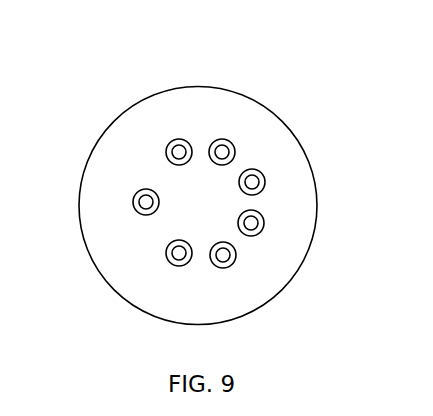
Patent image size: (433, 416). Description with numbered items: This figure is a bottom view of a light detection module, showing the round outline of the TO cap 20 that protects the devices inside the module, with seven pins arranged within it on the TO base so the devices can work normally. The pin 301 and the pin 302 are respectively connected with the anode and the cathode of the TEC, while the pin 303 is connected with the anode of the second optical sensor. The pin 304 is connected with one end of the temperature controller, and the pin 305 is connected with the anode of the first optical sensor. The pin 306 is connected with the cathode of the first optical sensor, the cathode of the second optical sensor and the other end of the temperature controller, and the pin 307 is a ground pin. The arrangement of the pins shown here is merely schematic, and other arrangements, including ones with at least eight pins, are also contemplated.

The TO cap 20 is at (205, 88).
The pin 301 is at (220, 154).
The pin 302 is at (226, 256).
The pin 303 is at (181, 154).
The pin 304 is at (177, 255).
The pin 305 is at (255, 222).
The pin 306 is at (250, 184).
The ground pin 307 is at (148, 203).